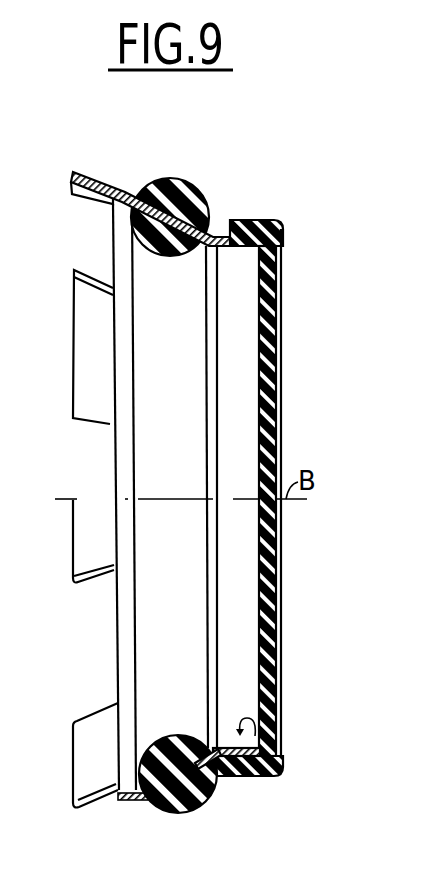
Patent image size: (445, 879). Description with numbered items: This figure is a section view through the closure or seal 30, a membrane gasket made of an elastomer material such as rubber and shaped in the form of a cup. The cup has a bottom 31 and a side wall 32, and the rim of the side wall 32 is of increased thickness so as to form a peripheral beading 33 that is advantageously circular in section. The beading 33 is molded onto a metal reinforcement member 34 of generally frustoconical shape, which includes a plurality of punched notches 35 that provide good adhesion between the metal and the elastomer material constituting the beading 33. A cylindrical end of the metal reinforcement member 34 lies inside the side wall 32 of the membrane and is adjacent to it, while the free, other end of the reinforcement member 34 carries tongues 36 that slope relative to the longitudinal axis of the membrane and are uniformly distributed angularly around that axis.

The closure or seal 30 is at (280, 496).
The bottom 31 is at (277, 390).
The side wall 32 is at (242, 220).
The peripheral beading 33 is at (203, 180).
The metal reinforcement member 34 is at (276, 778).
The punched notches 35 is at (231, 246).
The tongues 36 is at (97, 186).